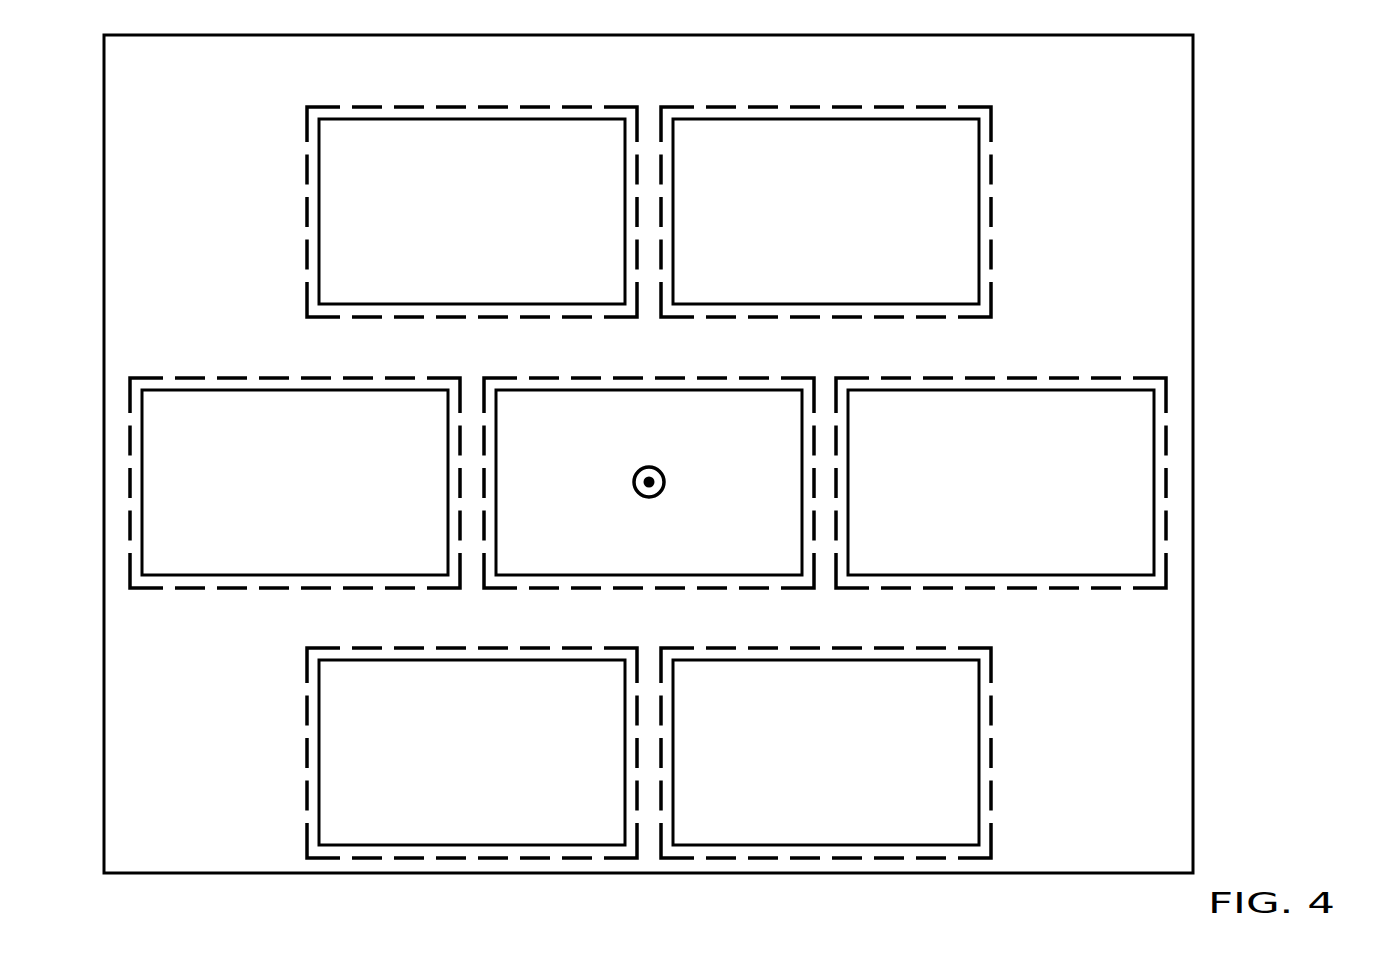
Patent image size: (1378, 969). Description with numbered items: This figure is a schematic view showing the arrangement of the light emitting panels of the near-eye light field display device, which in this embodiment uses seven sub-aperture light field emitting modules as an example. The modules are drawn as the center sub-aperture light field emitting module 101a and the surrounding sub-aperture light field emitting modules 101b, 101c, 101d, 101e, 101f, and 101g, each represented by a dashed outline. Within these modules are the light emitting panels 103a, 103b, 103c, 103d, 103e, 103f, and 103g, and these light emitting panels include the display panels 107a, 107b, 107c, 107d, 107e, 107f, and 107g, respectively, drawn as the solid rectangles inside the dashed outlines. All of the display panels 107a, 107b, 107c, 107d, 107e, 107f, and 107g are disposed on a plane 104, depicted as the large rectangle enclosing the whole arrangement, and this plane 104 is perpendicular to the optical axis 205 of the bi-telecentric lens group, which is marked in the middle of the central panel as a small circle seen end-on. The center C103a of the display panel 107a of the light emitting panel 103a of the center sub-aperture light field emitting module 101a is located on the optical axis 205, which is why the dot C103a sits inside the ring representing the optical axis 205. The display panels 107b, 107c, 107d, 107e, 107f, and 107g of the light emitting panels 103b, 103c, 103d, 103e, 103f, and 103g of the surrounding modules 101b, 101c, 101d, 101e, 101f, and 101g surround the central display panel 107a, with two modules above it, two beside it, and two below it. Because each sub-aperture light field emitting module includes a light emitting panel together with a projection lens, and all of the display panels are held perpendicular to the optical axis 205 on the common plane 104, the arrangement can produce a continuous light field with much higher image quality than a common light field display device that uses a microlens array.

The plane 104 is at (1150, 765).
The center sub-aperture light field emitting module 101a is at (497, 375).
The light emitting panel 103a is at (643, 387).
The display panel 107a is at (762, 423).
The sub-aperture light field emitting module 101b is at (368, 104).
The light emitting panel 103b is at (472, 115).
The display panel 107b is at (573, 153).
The sub-aperture light field emitting module 101c is at (192, 375).
The light emitting panel 103c is at (296, 387).
The display panel 107c is at (352, 423).
The sub-aperture light field emitting module 101d is at (368, 645).
The light emitting panel 103d is at (472, 656).
The display panel 107d is at (573, 693).
The sub-aperture light field emitting module 101e is at (737, 624).
The light emitting panel 103e is at (826, 656).
The display panel 107e is at (930, 693).
The sub-aperture light field emitting module 101f is at (915, 353).
The light emitting panel 103f is at (1003, 387).
The display panel 107f is at (1105, 423).
The sub-aperture light field emitting module 101g is at (722, 104).
The light emitting panel 103g is at (826, 115).
The display panel 107g is at (930, 152).
The optical axis 205 is at (657, 467).
The center C103a is at (647, 467).